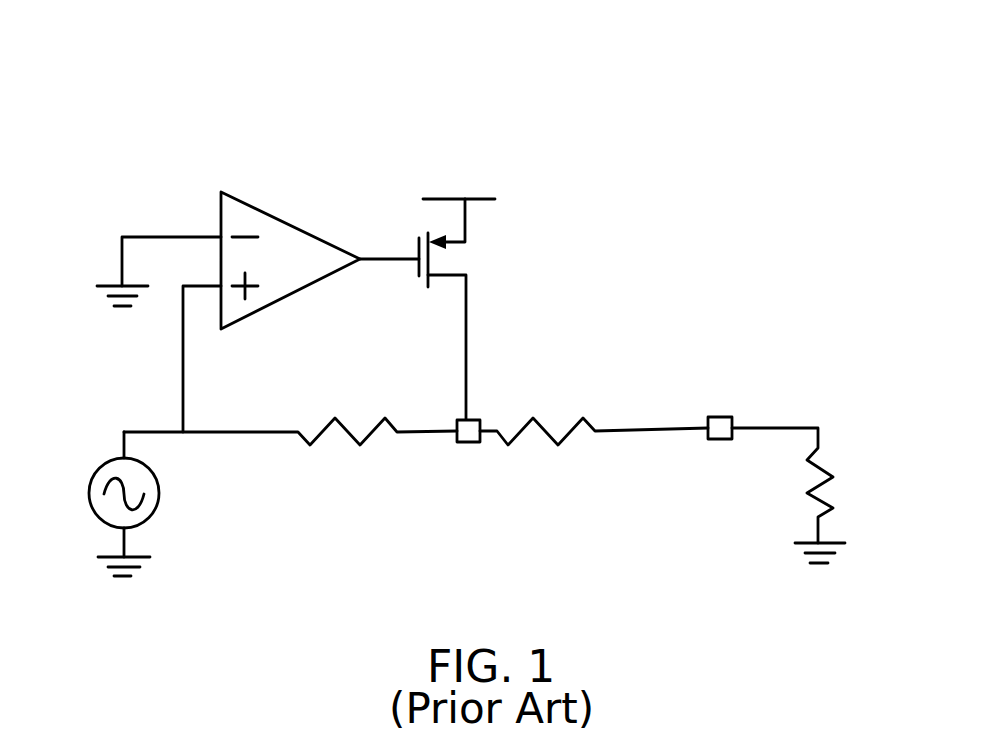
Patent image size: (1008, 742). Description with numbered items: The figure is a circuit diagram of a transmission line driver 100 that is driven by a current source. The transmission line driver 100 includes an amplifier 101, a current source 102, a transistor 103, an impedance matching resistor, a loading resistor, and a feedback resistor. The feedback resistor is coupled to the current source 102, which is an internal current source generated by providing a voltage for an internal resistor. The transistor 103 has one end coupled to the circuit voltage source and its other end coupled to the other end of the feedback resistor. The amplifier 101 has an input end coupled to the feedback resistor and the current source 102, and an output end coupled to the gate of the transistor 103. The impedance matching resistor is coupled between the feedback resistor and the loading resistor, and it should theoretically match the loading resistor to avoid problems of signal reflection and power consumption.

The transmission line driver 100 is at (560, 104).
The amplifier 101 is at (277, 213).
The current source 102 is at (93, 475).
The transistor 103 is at (468, 250).